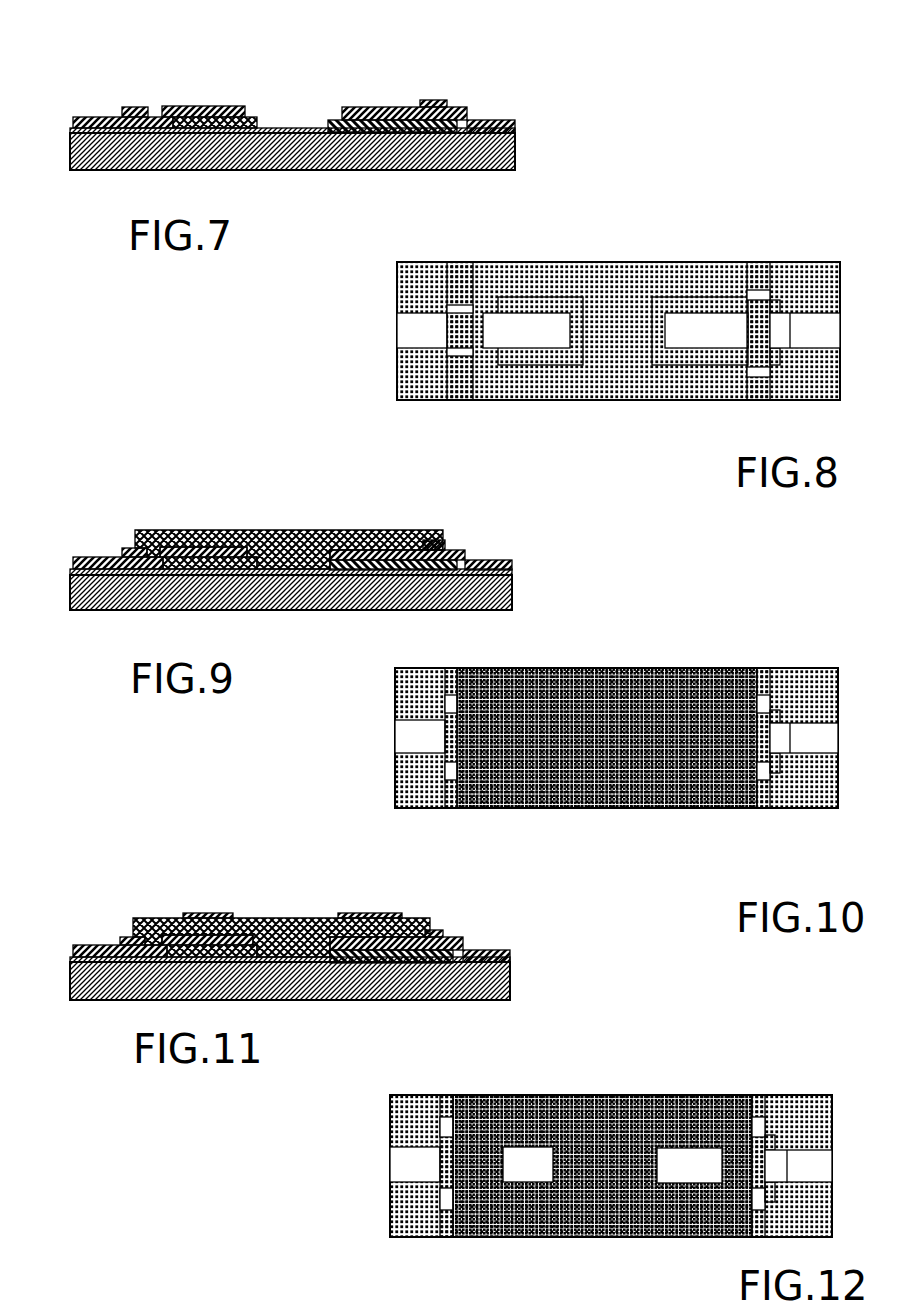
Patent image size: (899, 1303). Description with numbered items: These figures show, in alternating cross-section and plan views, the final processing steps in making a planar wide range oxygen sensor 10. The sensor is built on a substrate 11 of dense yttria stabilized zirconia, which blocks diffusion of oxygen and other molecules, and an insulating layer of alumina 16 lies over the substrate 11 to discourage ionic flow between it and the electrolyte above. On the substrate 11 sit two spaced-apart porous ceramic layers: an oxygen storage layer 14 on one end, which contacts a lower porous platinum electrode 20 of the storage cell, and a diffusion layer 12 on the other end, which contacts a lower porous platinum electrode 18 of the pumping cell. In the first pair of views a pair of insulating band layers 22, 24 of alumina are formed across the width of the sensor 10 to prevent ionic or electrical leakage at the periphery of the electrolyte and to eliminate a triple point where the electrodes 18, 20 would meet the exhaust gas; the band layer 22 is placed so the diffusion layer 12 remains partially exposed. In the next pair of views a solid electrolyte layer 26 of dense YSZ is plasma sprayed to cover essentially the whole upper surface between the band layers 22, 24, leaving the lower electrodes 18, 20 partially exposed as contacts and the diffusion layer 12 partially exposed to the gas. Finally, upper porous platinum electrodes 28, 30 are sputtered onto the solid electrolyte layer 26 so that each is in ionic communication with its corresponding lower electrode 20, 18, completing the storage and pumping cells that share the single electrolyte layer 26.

In FIG. 11, the wide range oxygen sensor 10 is at (555, 993).
In FIG. 7, the substrate 11 is at (505, 152).
In FIG. 9, the substrate 11 is at (505, 594).
In FIG. 11, the substrate 11 is at (262, 990).
In FIG. 7, the diffusion layer 12 is at (330, 120).
In FIG. 8, the diffusion layer 12 is at (672, 300).
In FIG. 9, the diffusion layer 12 is at (328, 560).
In FIG. 10, the diffusion layer 12 is at (782, 710).
In FIG. 11, the diffusion layer 12 is at (328, 950).
In FIG. 12, the diffusion layer 12 is at (775, 1135).
In FIG. 7, the oxygen storage layer 14 is at (257, 117).
In FIG. 8, the oxygen storage layer 14 is at (550, 300).
In FIG. 9, the oxygen storage layer 14 is at (262, 547).
In FIG. 11, the oxygen storage layer 14 is at (258, 935).
In FIG. 7, the insulating layer of alumina 16 is at (72, 130).
In FIG. 8, the insulating layer of alumina 16 is at (400, 265).
In FIG. 9, the insulating layer of alumina 16 is at (72, 570).
In FIG. 10, the insulating layer of alumina 16 is at (405, 692).
In FIG. 11, the insulating layer of alumina 16 is at (277, 957).
In FIG. 12, the insulating layer of alumina 16 is at (400, 1110).
In FIG. 7, the lower porous platinum electrode 18 is at (465, 110).
In FIG. 8, the lower porous platinum electrode 18 is at (808, 330).
In FIG. 9, the lower porous platinum electrode 18 is at (465, 552).
In FIG. 10, the lower porous platinum electrode 18 is at (806, 740).
In FIG. 11, the lower porous platinum electrode 18 is at (463, 945).
In FIG. 12, the lower porous platinum electrode 18 is at (803, 1165).
In FIG. 7, the lower porous platinum electrode 20 is at (118, 116).
In FIG. 8, the lower porous platinum electrode 20 is at (405, 330).
In FIG. 9, the lower porous platinum electrode 20 is at (78, 557).
In FIG. 10, the lower porous platinum electrode 20 is at (405, 738).
In FIG. 11, the lower porous platinum electrode 20 is at (78, 945).
In FIG. 12, the lower porous platinum electrode 20 is at (400, 1165).
In FIG. 7, the insulating band layer 22 is at (435, 100).
In FIG. 8, the insulating band layer 22 is at (757, 390).
In FIG. 9, the insulating band layer 22 is at (438, 540).
In FIG. 10, the insulating band layer 22 is at (763, 800).
In FIG. 11, the insulating band layer 22 is at (436, 930).
In FIG. 12, the insulating band layer 22 is at (758, 1228).
In FIG. 7, the insulating band layer 24 is at (140, 107).
In FIG. 8, the insulating band layer 24 is at (455, 388).
In FIG. 9, the insulating band layer 24 is at (133, 548).
In FIG. 10, the insulating band layer 24 is at (452, 795).
In FIG. 11, the insulating band layer 24 is at (125, 937).
In FIG. 12, the insulating band layer 24 is at (445, 1228).
In FIG. 9, the solid electrolyte layer 26 is at (205, 530).
In FIG. 10, the solid electrolyte layer 26 is at (575, 686).
In FIG. 11, the solid electrolyte layer 26 is at (170, 918).
In FIG. 12, the solid electrolyte layer 26 is at (630, 1228).
In FIG. 11, the upper porous platinum electrode 28 is at (205, 913).
In FIG. 12, the upper porous platinum electrode 28 is at (528, 1160).
In FIG. 11, the upper porous platinum electrode 30 is at (370, 913).
In FIG. 12, the upper porous platinum electrode 30 is at (700, 1160).